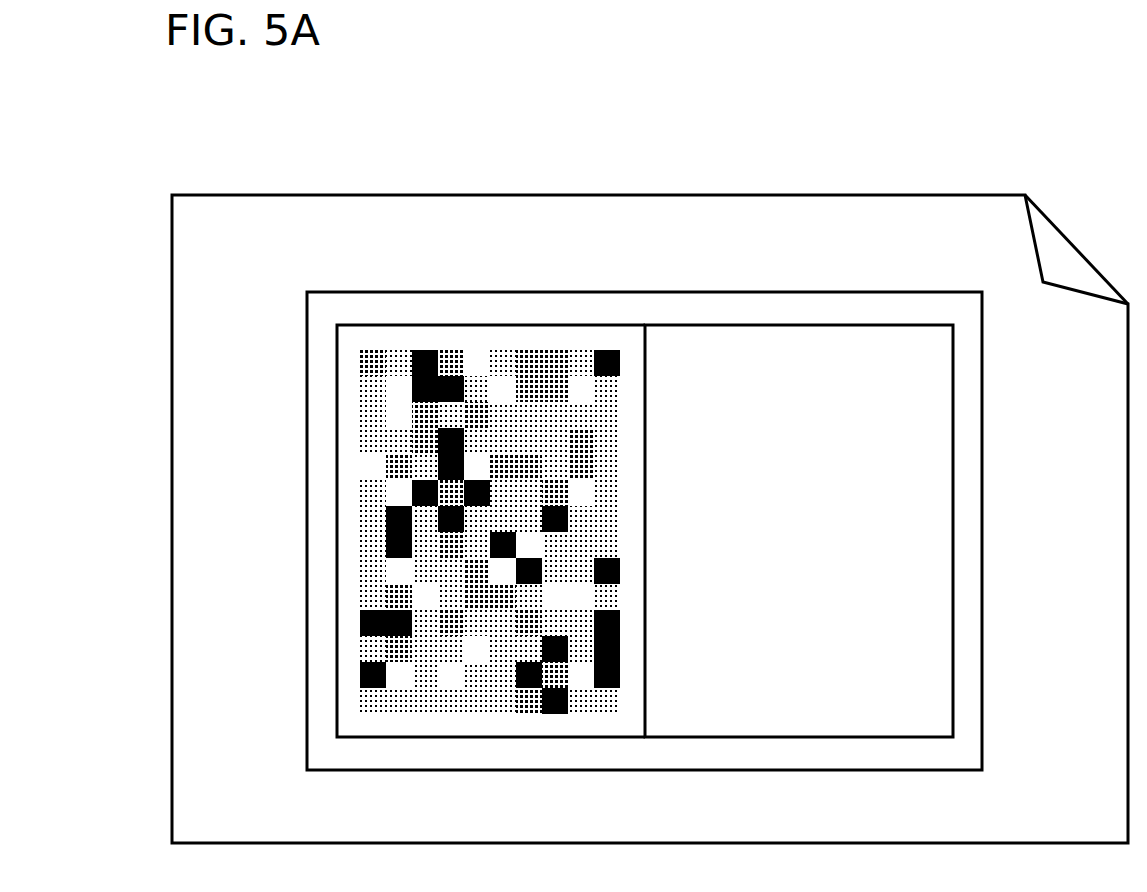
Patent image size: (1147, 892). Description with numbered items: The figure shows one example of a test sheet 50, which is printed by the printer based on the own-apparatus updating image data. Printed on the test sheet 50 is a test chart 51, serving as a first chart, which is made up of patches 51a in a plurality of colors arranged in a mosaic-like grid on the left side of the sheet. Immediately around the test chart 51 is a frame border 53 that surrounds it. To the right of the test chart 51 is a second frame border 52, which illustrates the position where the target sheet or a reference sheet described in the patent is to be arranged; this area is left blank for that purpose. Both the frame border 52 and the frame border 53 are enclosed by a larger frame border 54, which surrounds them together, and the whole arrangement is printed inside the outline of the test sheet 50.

The test sheet 50 is at (741, 195).
The test chart 51 is at (535, 352).
The patch 51a is at (558, 365).
The frame border 52 is at (872, 325).
The frame border 53 is at (375, 323).
The frame border 54 is at (828, 292).